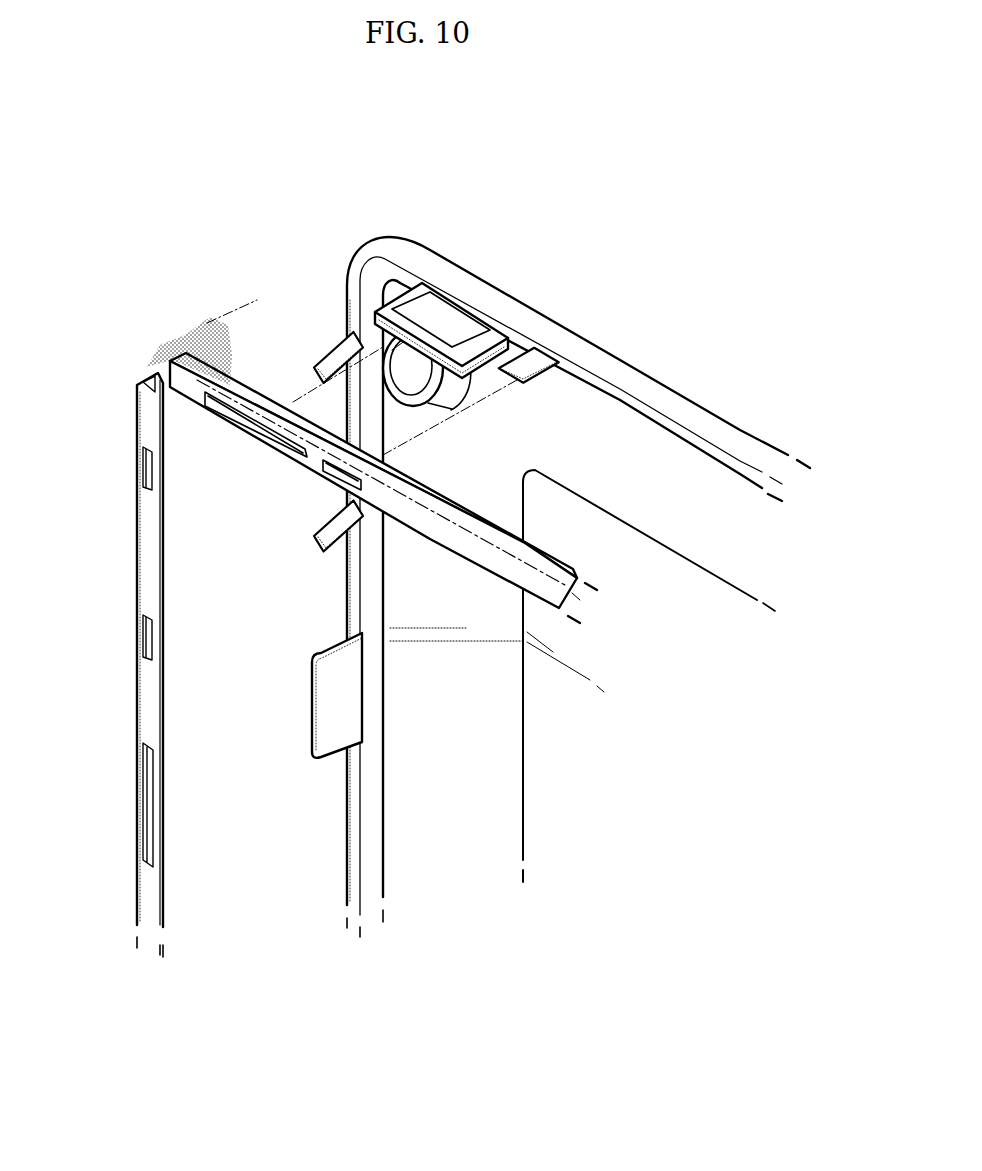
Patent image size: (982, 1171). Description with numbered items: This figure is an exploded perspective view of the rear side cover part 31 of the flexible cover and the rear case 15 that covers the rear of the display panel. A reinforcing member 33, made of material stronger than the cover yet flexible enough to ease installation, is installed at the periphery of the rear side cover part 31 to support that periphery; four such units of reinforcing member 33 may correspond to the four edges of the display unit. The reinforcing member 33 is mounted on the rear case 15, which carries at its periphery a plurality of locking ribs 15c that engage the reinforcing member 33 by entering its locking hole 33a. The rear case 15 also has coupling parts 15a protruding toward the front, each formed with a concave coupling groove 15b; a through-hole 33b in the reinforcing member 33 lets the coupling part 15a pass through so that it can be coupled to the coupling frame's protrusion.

The rear case 15 is at (671, 372).
The coupling part 15a is at (497, 342).
The coupling groove 15b is at (437, 318).
The locking rib 15c is at (321, 352).
The rear side cover part 31 is at (194, 346).
The reinforcing member 33 is at (460, 535).
The locking hole 33a is at (331, 466).
The through-hole 33b is at (242, 425).